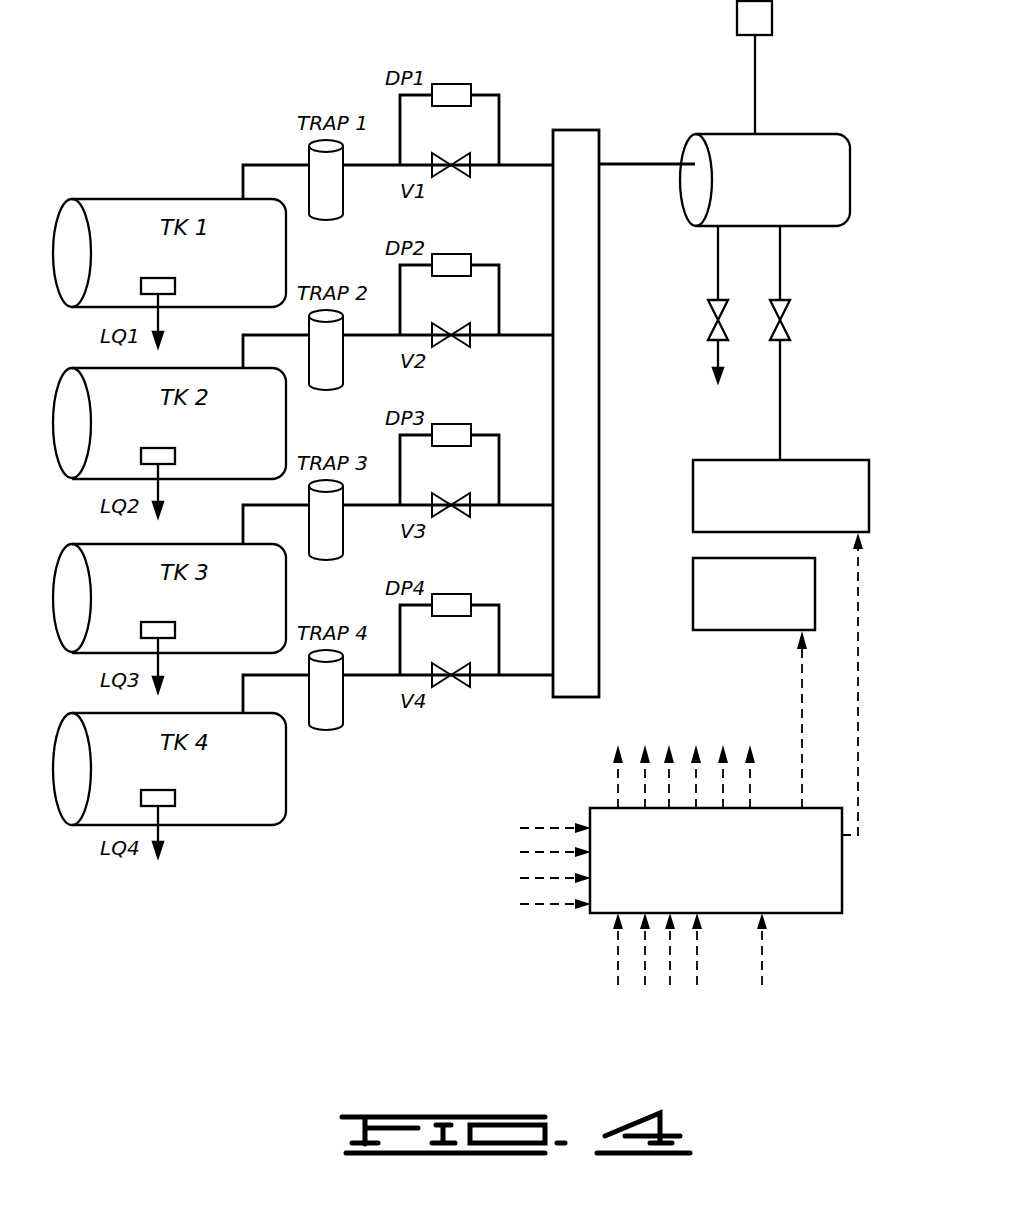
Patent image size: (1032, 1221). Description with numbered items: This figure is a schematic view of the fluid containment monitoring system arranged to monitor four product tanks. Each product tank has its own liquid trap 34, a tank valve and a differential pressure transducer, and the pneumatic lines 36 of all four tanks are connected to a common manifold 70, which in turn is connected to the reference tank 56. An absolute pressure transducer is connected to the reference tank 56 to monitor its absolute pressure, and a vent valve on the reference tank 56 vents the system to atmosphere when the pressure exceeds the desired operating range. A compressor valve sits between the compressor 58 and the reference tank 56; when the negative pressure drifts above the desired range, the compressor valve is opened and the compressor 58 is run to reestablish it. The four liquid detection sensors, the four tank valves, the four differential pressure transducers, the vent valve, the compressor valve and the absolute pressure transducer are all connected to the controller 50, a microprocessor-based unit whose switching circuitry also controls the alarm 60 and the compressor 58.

The liquid trap 34 is at (335, 188).
The pneumatic line 36 is at (243, 164).
The controller 50 is at (815, 881).
The reference tank 56 is at (832, 176).
The compressor 58 is at (835, 468).
The alarm 60 is at (705, 570).
The manifold 70 is at (575, 147).